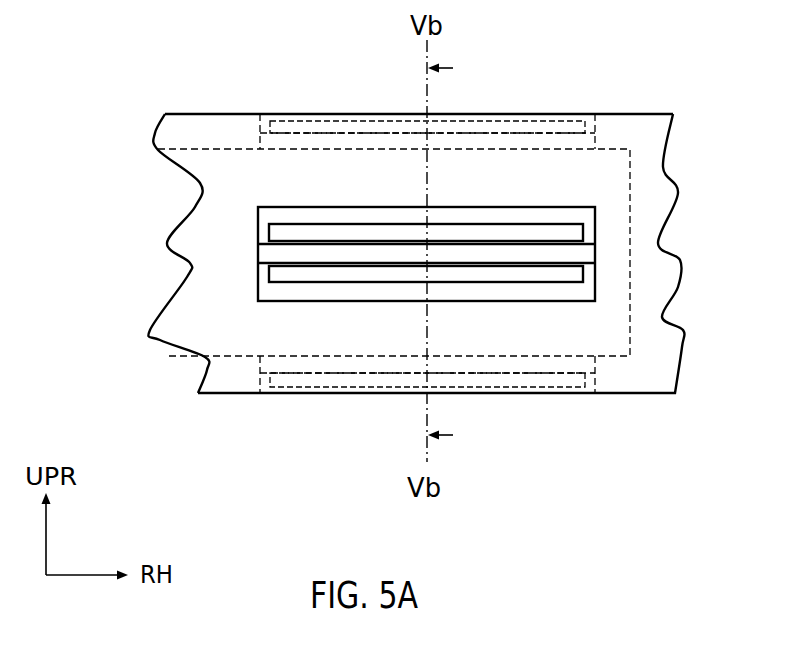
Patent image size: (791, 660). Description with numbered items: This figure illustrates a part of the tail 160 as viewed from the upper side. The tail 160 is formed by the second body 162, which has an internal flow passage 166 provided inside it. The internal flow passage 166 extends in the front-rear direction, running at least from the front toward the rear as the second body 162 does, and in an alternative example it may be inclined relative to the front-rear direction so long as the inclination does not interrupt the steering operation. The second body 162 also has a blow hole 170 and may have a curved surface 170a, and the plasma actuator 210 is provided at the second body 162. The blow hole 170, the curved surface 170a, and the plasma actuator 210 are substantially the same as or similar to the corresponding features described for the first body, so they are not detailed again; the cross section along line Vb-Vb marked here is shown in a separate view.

The tail 160 is at (650, 114).
The second body 162 is at (177, 114).
The internal flow passage 166 is at (229, 353).
The blow hole 170 is at (569, 237).
The curved surface 170a is at (513, 218).
The plasma actuator 210 is at (347, 232).